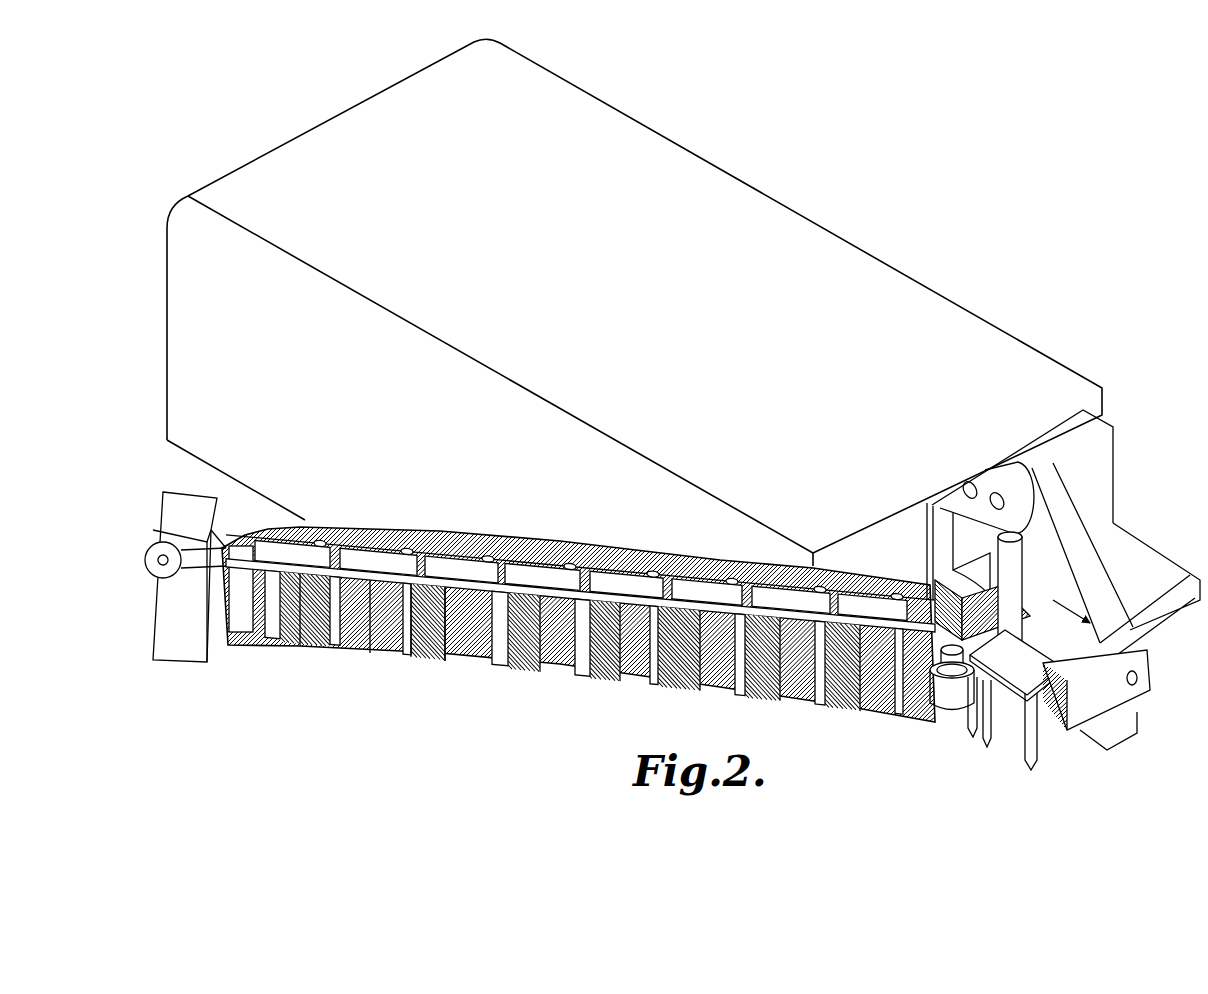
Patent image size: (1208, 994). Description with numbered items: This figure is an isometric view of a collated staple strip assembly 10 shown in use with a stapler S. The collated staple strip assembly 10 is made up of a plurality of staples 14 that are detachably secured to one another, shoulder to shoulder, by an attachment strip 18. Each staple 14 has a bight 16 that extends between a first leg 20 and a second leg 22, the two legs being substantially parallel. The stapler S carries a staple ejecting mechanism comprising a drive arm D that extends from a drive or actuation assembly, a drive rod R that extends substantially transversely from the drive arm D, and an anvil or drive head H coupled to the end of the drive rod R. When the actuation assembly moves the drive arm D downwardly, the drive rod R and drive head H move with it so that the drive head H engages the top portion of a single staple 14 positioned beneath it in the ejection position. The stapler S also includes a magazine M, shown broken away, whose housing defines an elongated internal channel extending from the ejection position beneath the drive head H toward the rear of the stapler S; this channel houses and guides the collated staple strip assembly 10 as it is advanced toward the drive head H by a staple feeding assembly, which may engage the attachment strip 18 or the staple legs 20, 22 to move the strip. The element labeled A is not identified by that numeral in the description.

The stapler S is at (878, 242).
The magazine M is at (232, 662).
The collated staple strip assembly 10 is at (614, 664).
The staple 14 is at (557, 654).
The bight 16 is at (479, 558).
The attachment strip 18 is at (455, 566).
The first leg 20 is at (431, 648).
The second leg 22 is at (491, 648).
The drive arm D is at (1018, 467).
The drive rod R is at (1018, 597).
The drive head H is at (1037, 665).
The actuator A is at (947, 690).